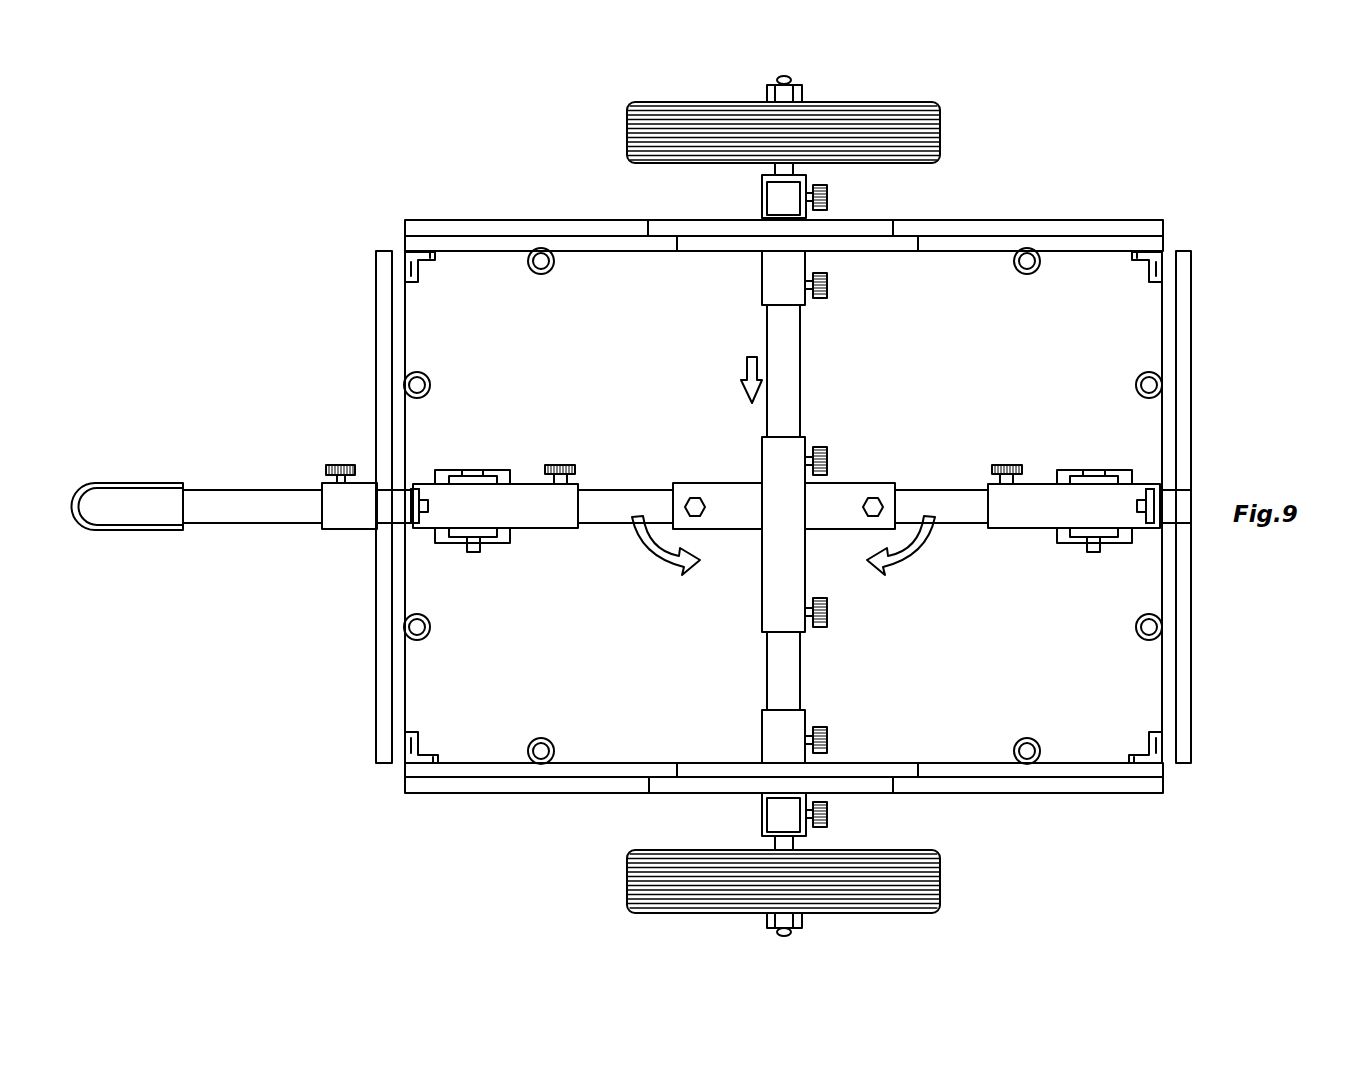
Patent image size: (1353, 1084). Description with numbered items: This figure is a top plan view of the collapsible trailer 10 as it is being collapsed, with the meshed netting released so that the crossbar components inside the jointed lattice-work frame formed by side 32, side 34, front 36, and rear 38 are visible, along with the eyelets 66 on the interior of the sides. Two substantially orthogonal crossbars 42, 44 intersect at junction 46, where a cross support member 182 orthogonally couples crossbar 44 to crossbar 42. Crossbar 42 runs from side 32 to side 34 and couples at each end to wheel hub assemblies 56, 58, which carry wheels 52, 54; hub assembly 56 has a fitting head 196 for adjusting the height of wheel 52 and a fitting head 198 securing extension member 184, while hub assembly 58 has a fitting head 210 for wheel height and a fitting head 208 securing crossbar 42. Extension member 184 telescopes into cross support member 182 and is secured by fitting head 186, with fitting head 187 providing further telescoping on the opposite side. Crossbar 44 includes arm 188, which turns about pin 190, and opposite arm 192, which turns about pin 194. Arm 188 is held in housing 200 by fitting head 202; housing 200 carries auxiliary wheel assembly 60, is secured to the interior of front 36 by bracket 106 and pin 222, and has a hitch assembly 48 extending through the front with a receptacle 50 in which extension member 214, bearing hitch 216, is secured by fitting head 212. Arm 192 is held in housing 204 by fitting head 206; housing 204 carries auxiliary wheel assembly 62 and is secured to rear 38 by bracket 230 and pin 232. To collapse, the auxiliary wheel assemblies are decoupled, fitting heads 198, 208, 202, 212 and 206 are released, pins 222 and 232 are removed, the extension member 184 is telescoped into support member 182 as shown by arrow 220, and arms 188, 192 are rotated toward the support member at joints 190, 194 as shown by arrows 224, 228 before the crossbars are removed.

The collapsible trailer 10 is at (1166, 160).
The side 32 is at (515, 226).
The side 34 is at (514, 794).
The front 36 is at (378, 682).
The rear 38 is at (1191, 320).
The crossbar 42 is at (800, 352).
The crossbar 44 is at (942, 488).
The junction 46 is at (880, 483).
The hitch assembly 48 is at (350, 530).
The receptacle 50 is at (322, 522).
The wheel 52 is at (940, 135).
The wheel 54 is at (940, 878).
The wheel hub assembly 56 is at (805, 258).
The wheel hub assembly 58 is at (762, 812).
The auxiliary wheel assembly 60 is at (478, 470).
The auxiliary wheel assembly 62 is at (1093, 470).
The eyelets 66 is at (541, 274).
The bracket 106 is at (416, 488).
The cross support member 182 is at (762, 622).
The extension member 184 is at (800, 380).
The fitting head 186 is at (827, 460).
The fitting head 187 is at (827, 617).
The arm 188 is at (625, 492).
The pin 190 is at (702, 510).
The arm 192 is at (978, 523).
The pin 194 is at (866, 510).
The fitting head 196 is at (827, 198).
The fitting head 198 is at (827, 290).
The housing 200 is at (542, 530).
The fitting head 202 is at (562, 465).
The housing 204 is at (1020, 530).
The fitting head 206 is at (1006, 465).
The fitting head 208 is at (827, 738).
The fitting head 210 is at (827, 814).
The fitting head 212 is at (340, 465).
The extension member 214 is at (256, 490).
The hitch 216 is at (122, 483).
The arrow 220 is at (745, 370).
The pin 222 is at (428, 506).
The arrow 224 is at (668, 562).
The arrow 228 is at (893, 562).
The bracket 230 is at (1148, 488).
The pin 232 is at (1137, 506).